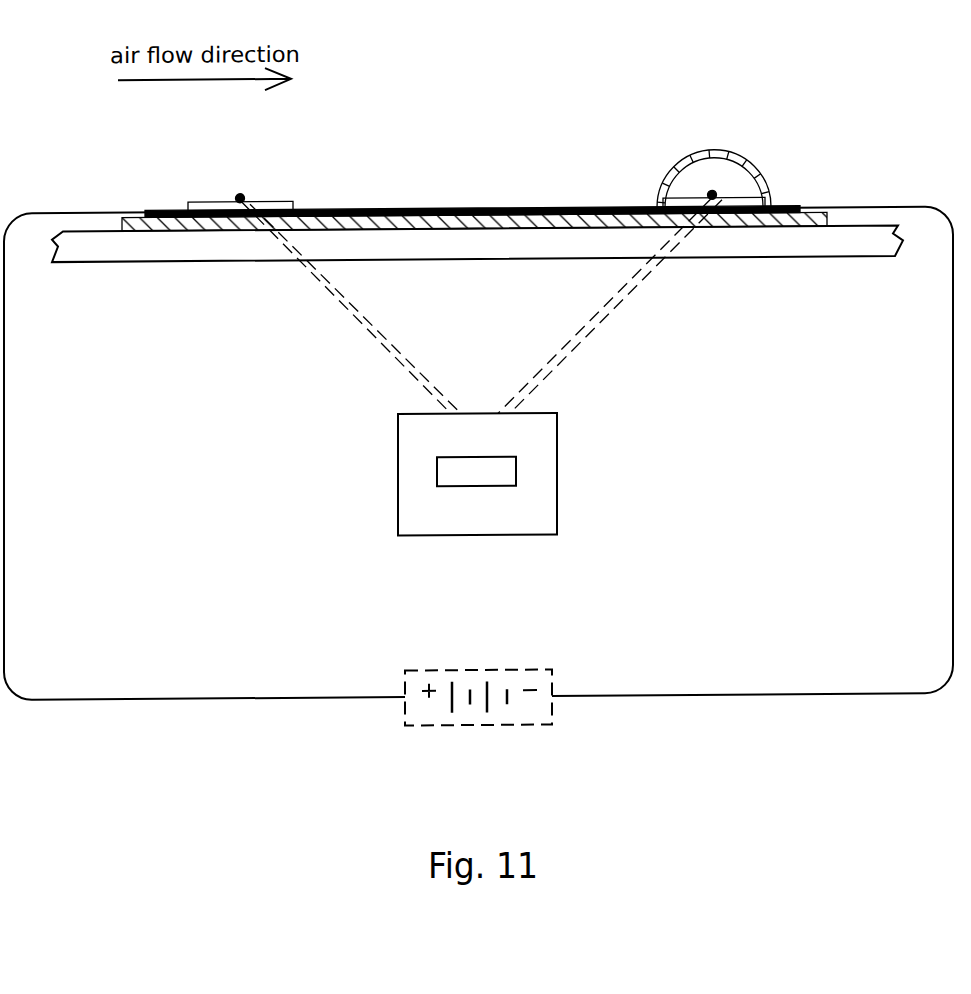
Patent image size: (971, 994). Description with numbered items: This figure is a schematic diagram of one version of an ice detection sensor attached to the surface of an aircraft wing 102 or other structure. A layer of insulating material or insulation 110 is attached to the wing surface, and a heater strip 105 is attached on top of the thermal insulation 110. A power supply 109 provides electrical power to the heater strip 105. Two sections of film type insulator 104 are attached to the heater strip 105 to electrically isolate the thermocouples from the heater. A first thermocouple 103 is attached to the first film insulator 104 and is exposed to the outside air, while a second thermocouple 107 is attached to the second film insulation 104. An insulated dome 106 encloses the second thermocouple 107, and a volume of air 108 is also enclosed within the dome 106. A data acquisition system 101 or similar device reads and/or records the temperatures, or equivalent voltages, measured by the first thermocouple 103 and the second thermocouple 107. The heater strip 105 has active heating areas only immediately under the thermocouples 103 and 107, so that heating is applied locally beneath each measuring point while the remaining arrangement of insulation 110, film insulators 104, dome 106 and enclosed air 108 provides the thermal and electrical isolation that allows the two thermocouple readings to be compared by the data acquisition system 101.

The data acquisition system 101 is at (481, 367).
The aircraft wing 102 is at (191, 264).
The first thermocouple 103 is at (240, 200).
The film type insulator 104 is at (256, 203).
The heater strip 105 is at (478, 212).
The insulated dome 106 is at (683, 166).
The second thermocouple 107 is at (712, 198).
The volume of air 108 is at (736, 175).
The power supply 109 is at (478, 713).
The insulation 110 is at (768, 224).